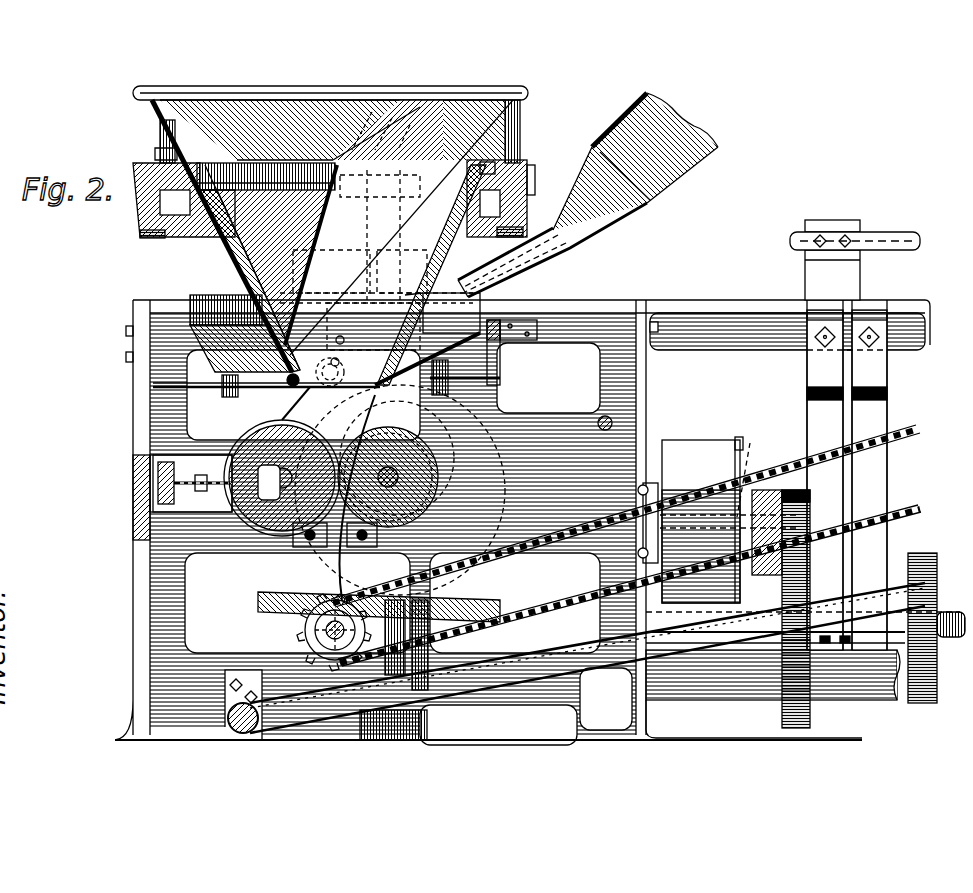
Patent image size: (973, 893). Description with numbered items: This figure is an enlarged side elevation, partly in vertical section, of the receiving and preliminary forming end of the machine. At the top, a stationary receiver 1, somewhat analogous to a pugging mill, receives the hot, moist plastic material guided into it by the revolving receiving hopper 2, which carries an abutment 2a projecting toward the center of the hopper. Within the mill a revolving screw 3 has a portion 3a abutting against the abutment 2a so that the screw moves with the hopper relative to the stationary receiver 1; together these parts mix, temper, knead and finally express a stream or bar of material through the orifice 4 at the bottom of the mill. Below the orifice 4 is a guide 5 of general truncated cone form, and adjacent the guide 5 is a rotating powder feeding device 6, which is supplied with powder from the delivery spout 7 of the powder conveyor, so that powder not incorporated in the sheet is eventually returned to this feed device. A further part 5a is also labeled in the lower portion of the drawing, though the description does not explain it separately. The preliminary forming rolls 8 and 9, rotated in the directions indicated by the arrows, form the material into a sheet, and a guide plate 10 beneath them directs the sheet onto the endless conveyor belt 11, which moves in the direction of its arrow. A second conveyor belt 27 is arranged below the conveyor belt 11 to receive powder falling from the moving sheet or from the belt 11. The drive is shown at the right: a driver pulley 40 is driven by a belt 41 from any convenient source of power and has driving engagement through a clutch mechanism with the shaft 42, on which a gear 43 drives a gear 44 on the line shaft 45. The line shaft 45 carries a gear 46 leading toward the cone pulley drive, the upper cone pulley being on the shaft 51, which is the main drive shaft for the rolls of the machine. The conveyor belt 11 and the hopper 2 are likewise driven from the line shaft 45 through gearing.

The stationary receiver 1 is at (205, 240).
The revolving receiving hopper 2 is at (508, 90).
The abutment 2a is at (425, 130).
The revolving screw 3 is at (345, 264).
The screw portion 3a is at (490, 168).
The orifice 4 is at (350, 348).
The guide 5 is at (292, 382).
The belt 5a is at (500, 640).
The rotating powder feeding device 6 is at (427, 339).
The delivery spout 7 is at (535, 250).
The preliminary forming roll 8 is at (150, 425).
The preliminary forming roll 9 is at (455, 430).
The guide plate 10 is at (335, 565).
The endless conveyor belt 11 is at (480, 563).
The second conveyor belt 27 is at (543, 650).
The driver pulley 40 is at (720, 440).
The belt 41 is at (718, 445).
The shaft 42 is at (693, 490).
The gear 43 is at (790, 490).
The gear 44 is at (812, 713).
The line shaft 45 is at (712, 637).
The gear 46 is at (925, 695).
The shaft 51 is at (885, 238).